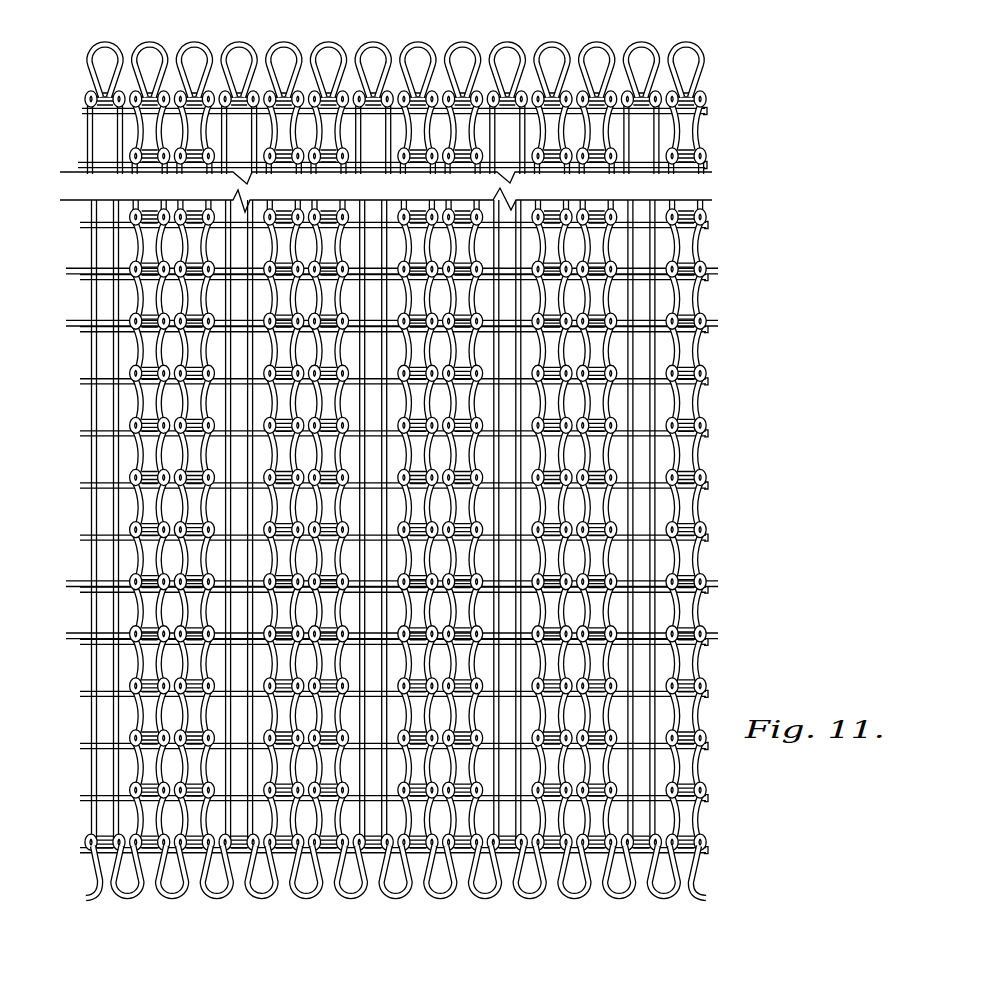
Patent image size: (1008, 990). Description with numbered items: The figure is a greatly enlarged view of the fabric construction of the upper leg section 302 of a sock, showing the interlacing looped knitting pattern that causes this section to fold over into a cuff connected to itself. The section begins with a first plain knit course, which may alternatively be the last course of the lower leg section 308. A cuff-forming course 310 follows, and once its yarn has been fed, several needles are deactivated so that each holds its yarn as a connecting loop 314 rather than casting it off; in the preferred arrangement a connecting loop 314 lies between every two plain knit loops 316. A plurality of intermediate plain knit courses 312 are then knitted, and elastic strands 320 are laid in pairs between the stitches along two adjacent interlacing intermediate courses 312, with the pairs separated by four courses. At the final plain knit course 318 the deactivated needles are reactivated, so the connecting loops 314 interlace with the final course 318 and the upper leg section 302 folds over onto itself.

The upper leg section 302 is at (716, 102).
The lower leg section 308 is at (705, 895).
The cuff-forming course 310 is at (706, 815).
The intermediate plain knit courses 312 is at (697, 128).
The connecting loop 314 is at (226, 98).
The plain knit loops 316 is at (135, 813).
The final plain knit course 318 is at (101, 46).
The elastic strands 320 is at (70, 272).